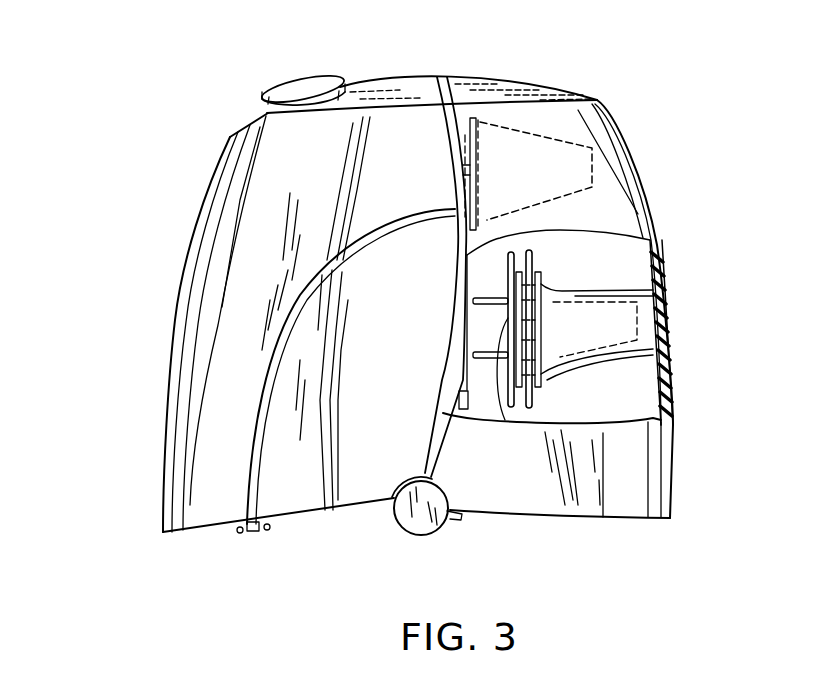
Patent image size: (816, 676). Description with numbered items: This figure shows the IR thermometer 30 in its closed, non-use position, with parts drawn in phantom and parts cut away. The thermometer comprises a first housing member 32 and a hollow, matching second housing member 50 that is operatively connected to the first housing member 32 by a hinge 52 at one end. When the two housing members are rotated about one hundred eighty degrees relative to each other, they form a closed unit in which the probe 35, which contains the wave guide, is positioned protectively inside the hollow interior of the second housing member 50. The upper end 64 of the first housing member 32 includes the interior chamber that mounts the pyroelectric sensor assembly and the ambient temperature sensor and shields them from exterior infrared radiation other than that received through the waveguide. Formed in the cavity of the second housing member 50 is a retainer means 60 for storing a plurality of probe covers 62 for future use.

The IR thermometer 30 is at (415, 296).
The first housing member 32 is at (187, 320).
The probe 35 is at (510, 150).
The second housing member 50 is at (628, 134).
The hinge 52 is at (440, 525).
The retainer means 60 is at (623, 288).
The probe covers 62 is at (506, 418).
The upper end 64 is at (369, 97).